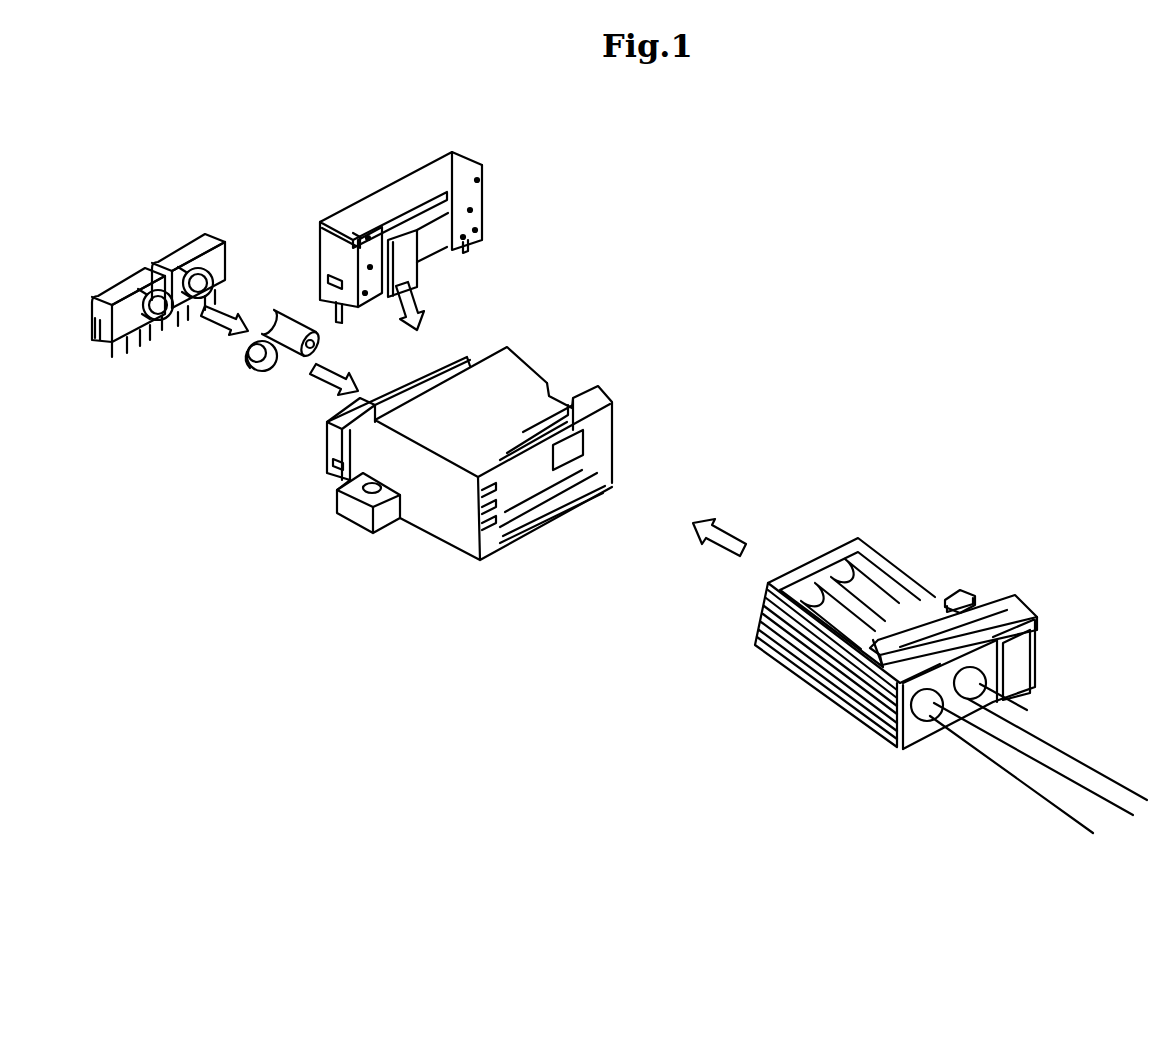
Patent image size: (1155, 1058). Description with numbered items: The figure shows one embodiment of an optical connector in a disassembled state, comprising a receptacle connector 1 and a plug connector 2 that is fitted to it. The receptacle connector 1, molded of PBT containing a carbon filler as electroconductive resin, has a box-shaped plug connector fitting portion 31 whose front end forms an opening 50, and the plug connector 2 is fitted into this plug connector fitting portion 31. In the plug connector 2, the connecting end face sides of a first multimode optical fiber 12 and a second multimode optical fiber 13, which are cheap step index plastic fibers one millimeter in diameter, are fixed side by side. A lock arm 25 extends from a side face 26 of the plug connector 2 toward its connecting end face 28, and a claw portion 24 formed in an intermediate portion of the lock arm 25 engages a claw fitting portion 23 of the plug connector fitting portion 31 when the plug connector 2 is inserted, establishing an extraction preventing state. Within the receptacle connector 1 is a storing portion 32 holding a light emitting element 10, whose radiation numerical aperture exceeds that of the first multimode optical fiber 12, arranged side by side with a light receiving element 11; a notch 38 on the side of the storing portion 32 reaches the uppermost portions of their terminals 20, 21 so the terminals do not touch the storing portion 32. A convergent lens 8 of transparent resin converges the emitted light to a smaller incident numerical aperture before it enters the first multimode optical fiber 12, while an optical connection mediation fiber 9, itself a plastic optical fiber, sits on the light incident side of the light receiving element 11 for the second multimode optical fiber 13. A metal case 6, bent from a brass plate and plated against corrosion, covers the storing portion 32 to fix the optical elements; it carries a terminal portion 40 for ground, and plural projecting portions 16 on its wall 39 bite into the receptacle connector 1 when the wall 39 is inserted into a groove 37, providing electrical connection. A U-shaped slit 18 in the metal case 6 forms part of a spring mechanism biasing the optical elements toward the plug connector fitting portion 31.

The receptacle connector 1 is at (454, 424).
The plug connector 2 is at (951, 652).
The metal case 6 is at (422, 212).
The convergent lens 8 is at (250, 370).
The optical connection mediation fiber 9 is at (300, 352).
The light emitting element 10 is at (160, 320).
The light receiving element 11 is at (212, 283).
The first multimode optical fiber 12 is at (1020, 772).
The second multimode optical fiber 13 is at (1054, 750).
The projecting portions 16 is at (338, 223).
The slit 18 is at (428, 215).
The terminals of light emitting element 20 is at (124, 346).
The terminals of light receiving element 21 is at (198, 300).
The claw fitting portion 23 is at (575, 398).
The claw portion 24 is at (975, 594).
The lock arm 25 is at (960, 590).
The side face 26 is at (920, 575).
The connecting end face 28 is at (812, 560).
The plug connector fitting portion 31 is at (442, 532).
The storing portion 32 is at (447, 352).
The groove 37 is at (365, 418).
The notch 38 is at (333, 470).
The wall 39 is at (322, 245).
The terminal portion for ground 40 is at (338, 316).
The opening 50 is at (538, 490).